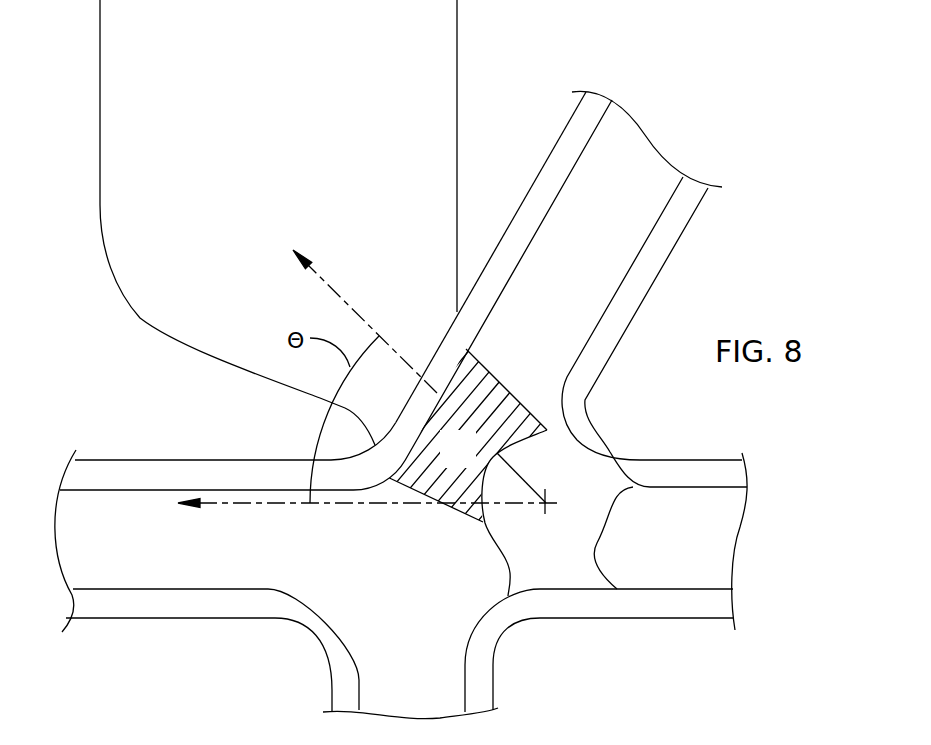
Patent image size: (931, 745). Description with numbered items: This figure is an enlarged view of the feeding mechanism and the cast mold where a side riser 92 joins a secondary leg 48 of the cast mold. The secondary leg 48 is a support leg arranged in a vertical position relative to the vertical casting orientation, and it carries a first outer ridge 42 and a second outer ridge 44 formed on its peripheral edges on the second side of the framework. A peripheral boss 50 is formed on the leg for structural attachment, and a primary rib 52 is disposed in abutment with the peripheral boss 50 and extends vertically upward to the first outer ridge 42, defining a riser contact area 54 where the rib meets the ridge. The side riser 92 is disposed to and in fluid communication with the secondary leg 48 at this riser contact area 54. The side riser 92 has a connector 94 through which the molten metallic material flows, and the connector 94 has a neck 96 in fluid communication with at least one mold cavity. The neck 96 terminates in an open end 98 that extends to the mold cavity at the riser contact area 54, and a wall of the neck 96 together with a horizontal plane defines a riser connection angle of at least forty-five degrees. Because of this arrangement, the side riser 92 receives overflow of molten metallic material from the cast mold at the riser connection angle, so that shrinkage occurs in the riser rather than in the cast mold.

The first outer ridge 42 is at (558, 157).
The second outer ridge 44 is at (665, 235).
The secondary leg 48 is at (335, 686).
The peripheral boss 50 is at (592, 527).
The primary rib 52 is at (467, 463).
The riser contact area 54 is at (443, 338).
The side riser 92 is at (271, 86).
The connector 94 is at (140, 318).
The neck 96 is at (320, 397).
The open end 98 is at (375, 447).